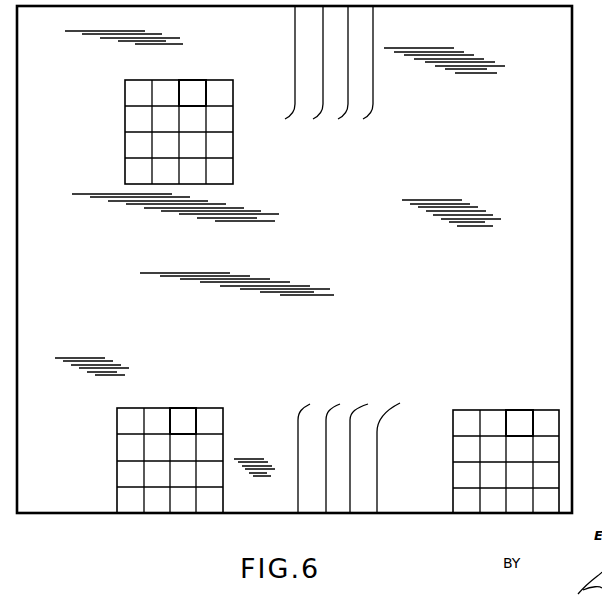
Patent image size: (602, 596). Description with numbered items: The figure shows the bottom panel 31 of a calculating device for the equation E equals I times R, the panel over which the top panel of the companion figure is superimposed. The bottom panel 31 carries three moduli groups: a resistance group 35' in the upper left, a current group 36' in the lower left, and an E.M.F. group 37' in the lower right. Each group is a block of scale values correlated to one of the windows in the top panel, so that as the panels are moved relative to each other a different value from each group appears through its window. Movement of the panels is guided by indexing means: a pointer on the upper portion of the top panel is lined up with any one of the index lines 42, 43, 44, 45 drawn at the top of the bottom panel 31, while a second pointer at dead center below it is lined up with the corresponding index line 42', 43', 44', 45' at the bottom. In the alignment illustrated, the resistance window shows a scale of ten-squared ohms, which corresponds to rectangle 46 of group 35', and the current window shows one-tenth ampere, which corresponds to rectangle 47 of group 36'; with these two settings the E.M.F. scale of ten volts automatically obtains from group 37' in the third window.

The bottom panel 31 is at (565, 198).
The moduli group for resistance 35' is at (164, 123).
The moduli group for current 36' is at (155, 450).
The moduli group for E.M.F. 37' is at (502, 435).
The index line 42 is at (281, 74).
The index line 43 is at (309, 74).
The index line 44 is at (336, 74).
The index line 45 is at (361, 74).
The corresponding index line 42' is at (312, 449).
The corresponding index line 43' is at (343, 449).
The corresponding index line 44' is at (370, 449).
The corresponding index line 45' is at (401, 449).
The rectangle of resistance moduli group 46 is at (203, 81).
The rectangle of current moduli group 47 is at (190, 411).